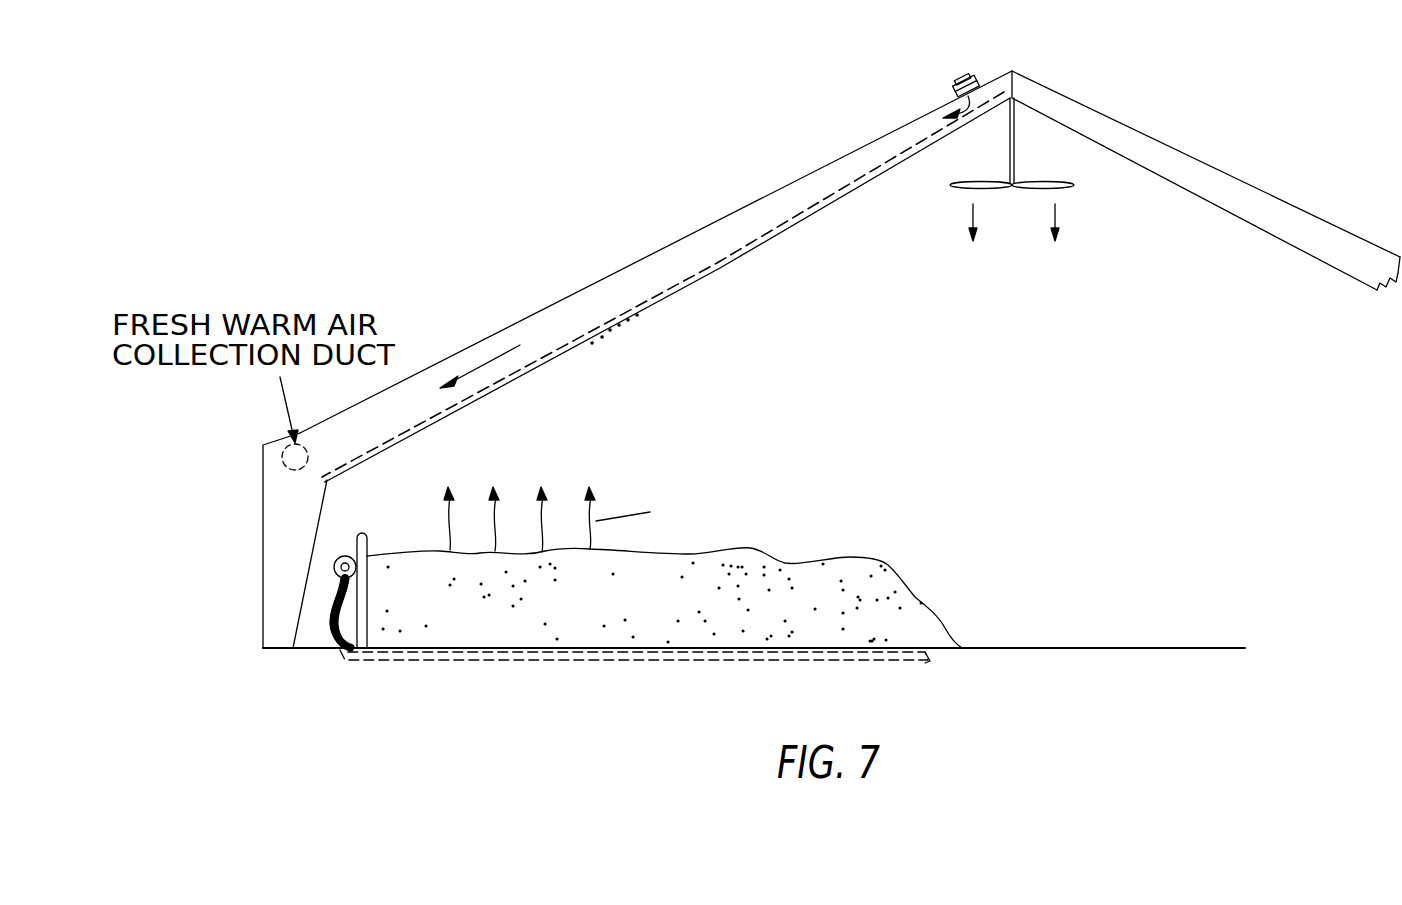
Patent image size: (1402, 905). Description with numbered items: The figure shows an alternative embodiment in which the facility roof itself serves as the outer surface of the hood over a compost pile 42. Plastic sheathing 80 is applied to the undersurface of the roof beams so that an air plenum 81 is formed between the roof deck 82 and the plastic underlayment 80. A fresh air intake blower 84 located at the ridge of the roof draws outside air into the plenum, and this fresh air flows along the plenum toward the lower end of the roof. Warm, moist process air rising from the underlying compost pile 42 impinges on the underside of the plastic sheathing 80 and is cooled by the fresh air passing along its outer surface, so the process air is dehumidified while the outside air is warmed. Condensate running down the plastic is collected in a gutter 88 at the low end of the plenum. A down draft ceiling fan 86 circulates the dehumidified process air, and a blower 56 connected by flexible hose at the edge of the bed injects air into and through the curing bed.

The compost pile 42 is at (890, 567).
The blower 56 is at (333, 567).
The plastic sheathing 80 is at (873, 178).
The air plenum 81 is at (830, 166).
The roof deck 82 is at (635, 260).
The fresh air intake blower 84 is at (963, 78).
The down draft ceiling fan 86 is at (1072, 187).
The gutter 88 is at (333, 484).